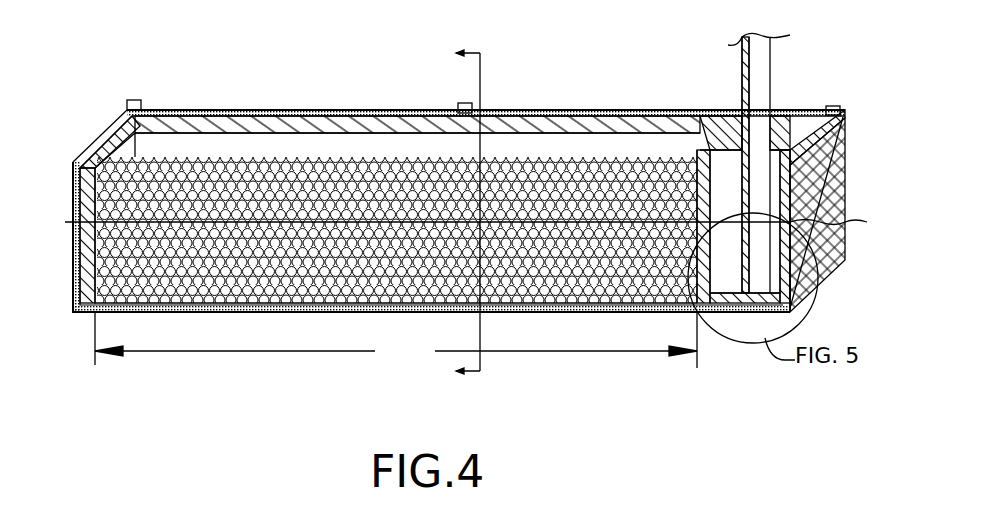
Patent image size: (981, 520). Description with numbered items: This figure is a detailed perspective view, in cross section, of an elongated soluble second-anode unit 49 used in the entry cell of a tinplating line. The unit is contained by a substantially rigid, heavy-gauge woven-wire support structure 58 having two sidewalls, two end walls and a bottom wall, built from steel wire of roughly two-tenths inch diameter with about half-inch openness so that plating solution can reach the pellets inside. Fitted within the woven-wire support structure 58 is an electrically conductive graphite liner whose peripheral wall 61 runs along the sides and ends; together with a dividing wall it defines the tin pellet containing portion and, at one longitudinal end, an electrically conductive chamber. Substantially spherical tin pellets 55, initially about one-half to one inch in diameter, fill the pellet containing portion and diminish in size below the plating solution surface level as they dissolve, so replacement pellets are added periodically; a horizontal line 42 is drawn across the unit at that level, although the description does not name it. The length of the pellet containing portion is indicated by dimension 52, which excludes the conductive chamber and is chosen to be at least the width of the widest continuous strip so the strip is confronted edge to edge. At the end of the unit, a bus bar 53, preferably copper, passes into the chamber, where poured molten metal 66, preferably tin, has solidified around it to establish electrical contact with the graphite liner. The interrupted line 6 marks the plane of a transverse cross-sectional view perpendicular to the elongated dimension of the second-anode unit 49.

The longitudinal axis 42 is at (66, 222).
The second-anode unit 49 is at (322, 100).
The length dimension 52 is at (396, 340).
The bus bar 53 is at (772, 80).
The tin pellets 55 is at (580, 152).
The woven-wire support structure 58 is at (123, 110).
The peripheral wall 61 is at (403, 127).
The molten metal 66 is at (711, 202).
The section line 6- 6 is at (468, 211).